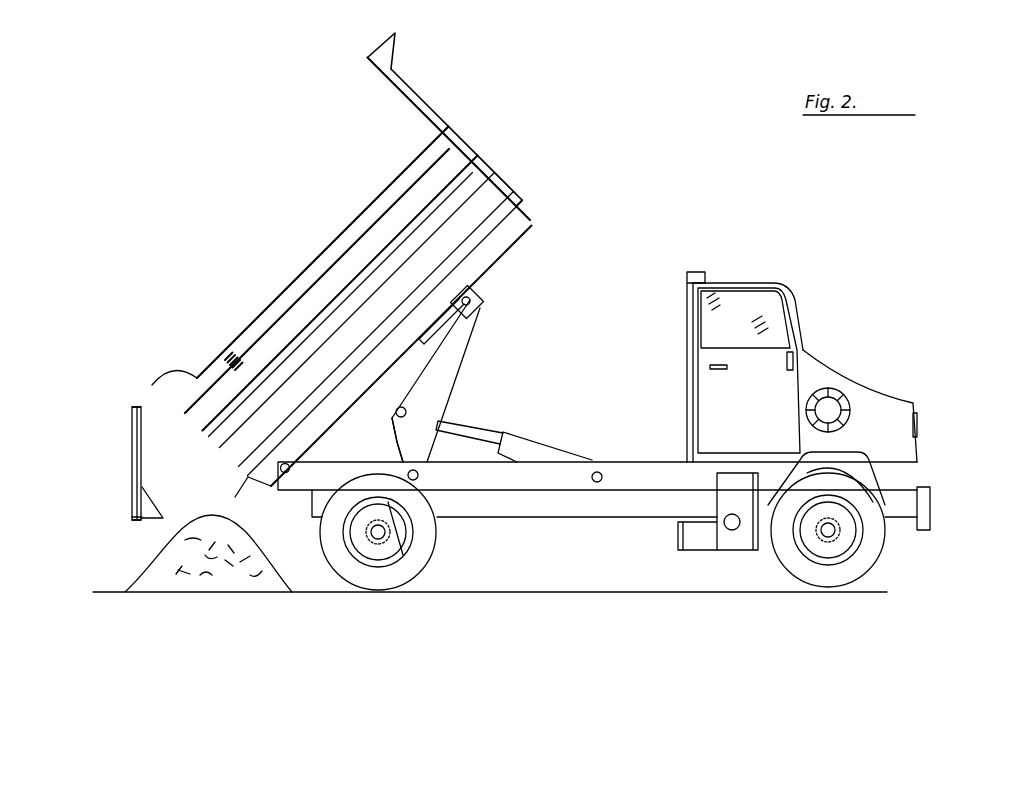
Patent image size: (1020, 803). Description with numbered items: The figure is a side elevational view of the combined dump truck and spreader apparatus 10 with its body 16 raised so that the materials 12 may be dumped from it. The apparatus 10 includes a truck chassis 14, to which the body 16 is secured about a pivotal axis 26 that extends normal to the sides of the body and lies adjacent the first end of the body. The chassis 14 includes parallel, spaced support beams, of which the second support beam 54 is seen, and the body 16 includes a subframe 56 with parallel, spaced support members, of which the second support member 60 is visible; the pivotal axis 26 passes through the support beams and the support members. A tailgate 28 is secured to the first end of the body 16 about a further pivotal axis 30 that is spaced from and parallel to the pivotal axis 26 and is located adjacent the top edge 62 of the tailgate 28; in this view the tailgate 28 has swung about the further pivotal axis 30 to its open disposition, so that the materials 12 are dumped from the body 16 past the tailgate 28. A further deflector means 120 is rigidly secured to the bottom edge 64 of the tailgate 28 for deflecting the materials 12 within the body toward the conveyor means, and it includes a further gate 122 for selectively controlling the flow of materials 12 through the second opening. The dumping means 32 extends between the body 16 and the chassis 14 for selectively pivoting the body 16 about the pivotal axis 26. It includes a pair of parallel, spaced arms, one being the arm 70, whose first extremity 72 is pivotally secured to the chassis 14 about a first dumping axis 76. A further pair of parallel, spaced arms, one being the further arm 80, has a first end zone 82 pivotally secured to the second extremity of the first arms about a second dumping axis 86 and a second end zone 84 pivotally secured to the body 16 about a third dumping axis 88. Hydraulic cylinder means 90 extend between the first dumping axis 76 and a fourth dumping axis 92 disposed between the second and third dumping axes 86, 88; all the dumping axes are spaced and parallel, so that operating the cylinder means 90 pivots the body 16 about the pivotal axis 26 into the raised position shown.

The combined dump truck and spreader apparatus 10 is at (645, 177).
The materials 12 is at (200, 575).
The truck chassis 14 is at (546, 546).
The body 16 is at (347, 265).
The pivotal axis 26 is at (288, 473).
The tailgate 28 is at (135, 462).
The further pivotal axis 30 is at (150, 390).
The dumping means 32 is at (473, 406).
The second support beam 54 is at (585, 490).
The subframe 56 is at (481, 258).
The second support member 60 is at (368, 233).
The top edge 62 is at (132, 408).
The bottom edge 64 is at (141, 530).
The arm 70 is at (685, 483).
The first extremity 72 is at (600, 482).
The first dumping axis 76 is at (597, 470).
The further arm 80 is at (448, 353).
The first end zone 82 is at (393, 411).
The second end zone 84 is at (482, 308).
The second dumping axis 86 is at (417, 480).
The third dumping axis 88 is at (433, 313).
The hydraulic cylinder means 90 is at (513, 440).
The fourth dumping axis 92 is at (397, 404).
The further deflector means 120 is at (141, 514).
The further gate 122 is at (142, 493).